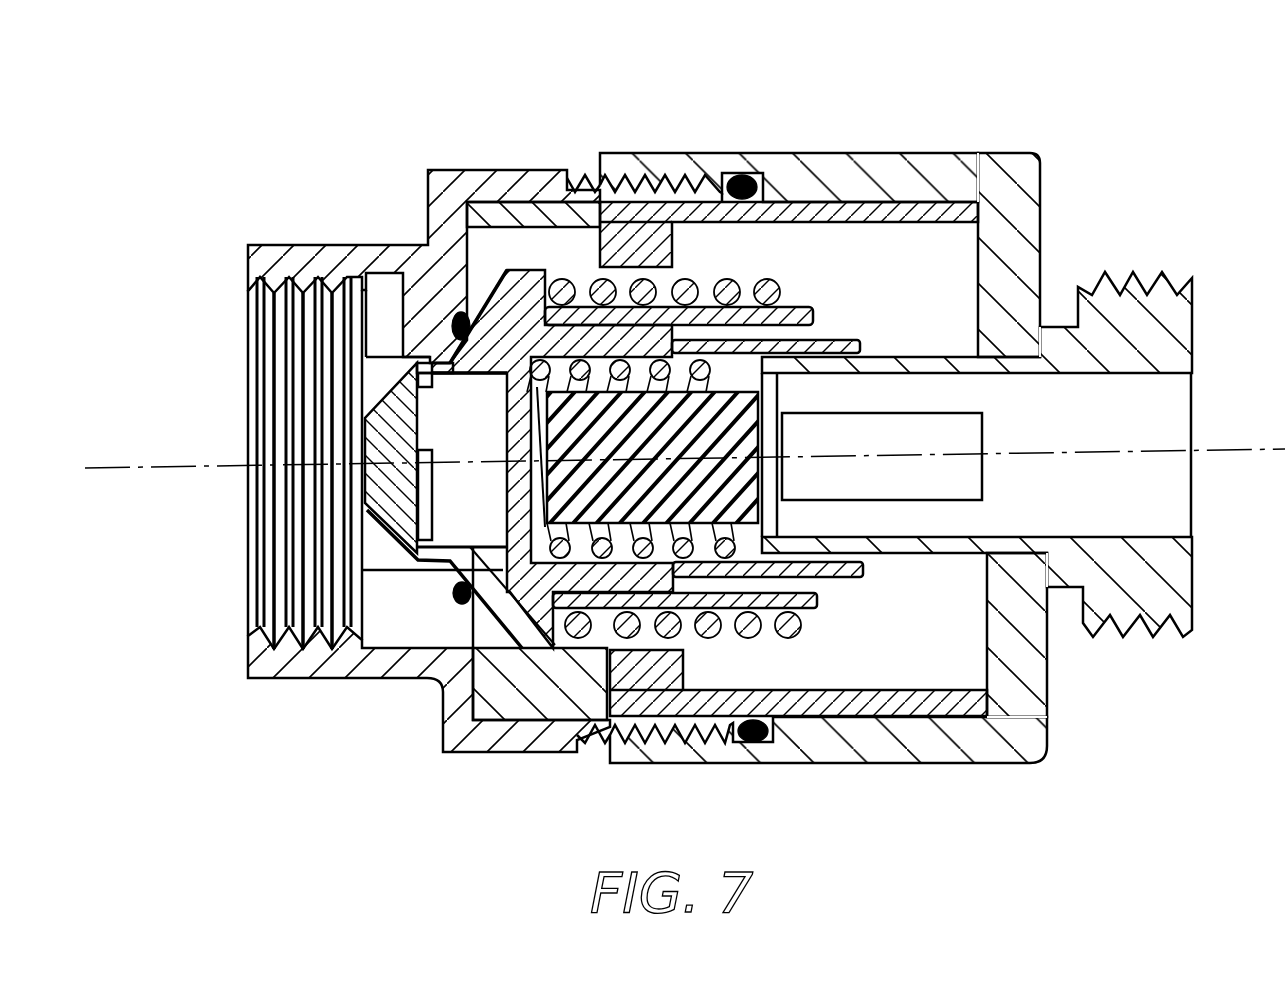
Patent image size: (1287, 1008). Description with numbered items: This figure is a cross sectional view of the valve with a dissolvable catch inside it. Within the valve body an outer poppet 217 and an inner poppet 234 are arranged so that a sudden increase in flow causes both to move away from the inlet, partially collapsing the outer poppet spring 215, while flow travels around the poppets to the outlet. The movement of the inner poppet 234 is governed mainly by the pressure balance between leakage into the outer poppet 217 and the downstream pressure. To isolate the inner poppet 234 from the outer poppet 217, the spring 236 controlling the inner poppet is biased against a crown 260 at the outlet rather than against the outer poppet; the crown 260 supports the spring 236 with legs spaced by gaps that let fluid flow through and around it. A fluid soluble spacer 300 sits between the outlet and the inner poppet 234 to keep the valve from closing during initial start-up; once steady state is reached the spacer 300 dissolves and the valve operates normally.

The fluid soluble spacer 300 is at (750, 372).
The outer poppet 217 is at (800, 300).
The inner poppet 234 is at (845, 335).
The spring 236 is at (582, 459).
The crown 260 is at (917, 555).
The outer poppet spring 215 is at (800, 637).